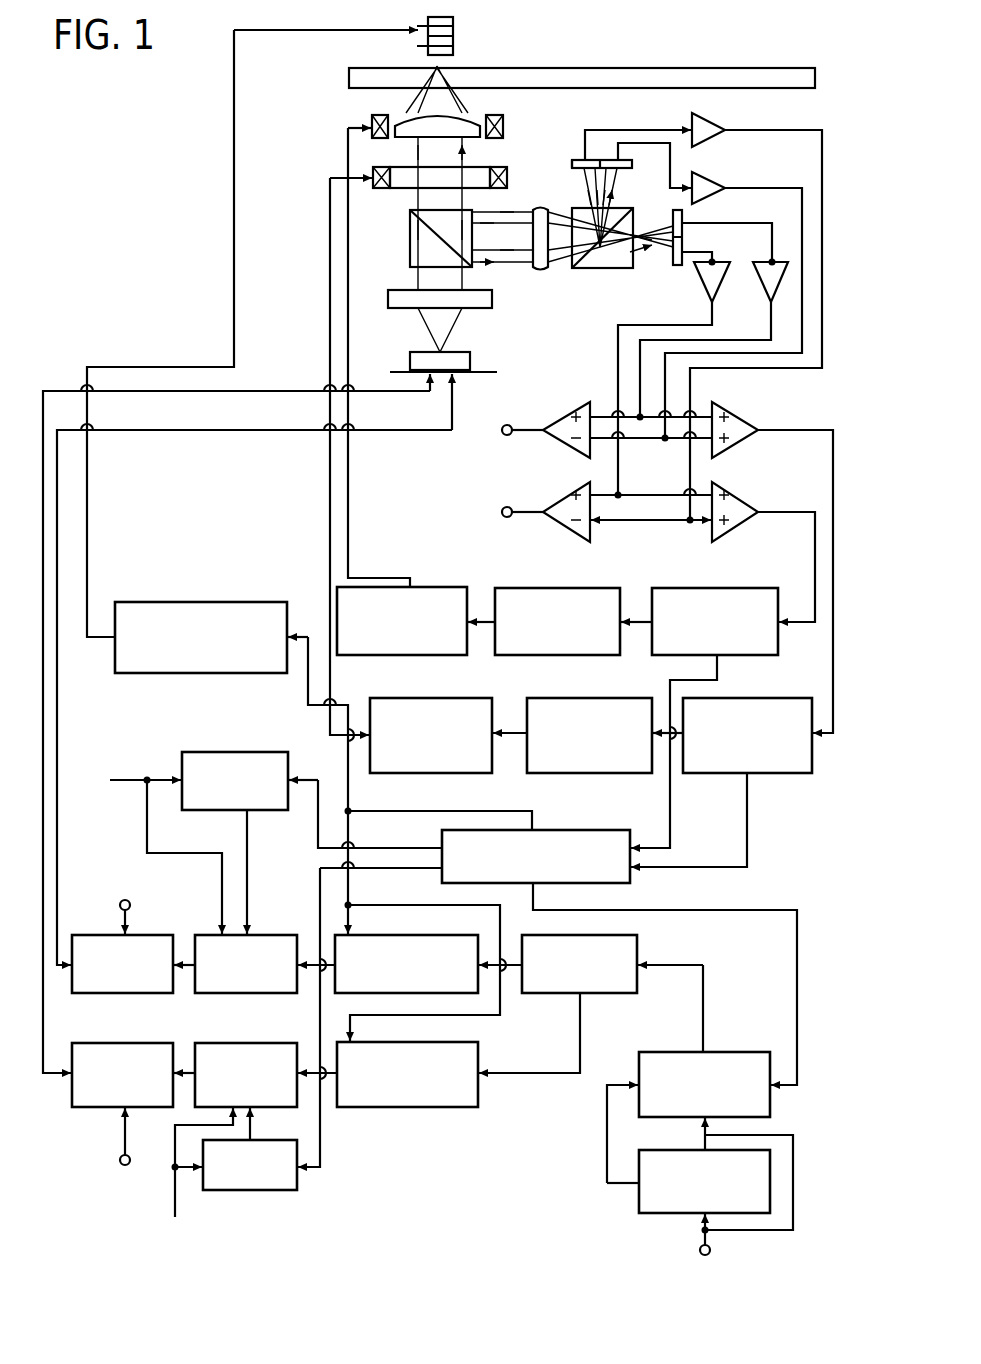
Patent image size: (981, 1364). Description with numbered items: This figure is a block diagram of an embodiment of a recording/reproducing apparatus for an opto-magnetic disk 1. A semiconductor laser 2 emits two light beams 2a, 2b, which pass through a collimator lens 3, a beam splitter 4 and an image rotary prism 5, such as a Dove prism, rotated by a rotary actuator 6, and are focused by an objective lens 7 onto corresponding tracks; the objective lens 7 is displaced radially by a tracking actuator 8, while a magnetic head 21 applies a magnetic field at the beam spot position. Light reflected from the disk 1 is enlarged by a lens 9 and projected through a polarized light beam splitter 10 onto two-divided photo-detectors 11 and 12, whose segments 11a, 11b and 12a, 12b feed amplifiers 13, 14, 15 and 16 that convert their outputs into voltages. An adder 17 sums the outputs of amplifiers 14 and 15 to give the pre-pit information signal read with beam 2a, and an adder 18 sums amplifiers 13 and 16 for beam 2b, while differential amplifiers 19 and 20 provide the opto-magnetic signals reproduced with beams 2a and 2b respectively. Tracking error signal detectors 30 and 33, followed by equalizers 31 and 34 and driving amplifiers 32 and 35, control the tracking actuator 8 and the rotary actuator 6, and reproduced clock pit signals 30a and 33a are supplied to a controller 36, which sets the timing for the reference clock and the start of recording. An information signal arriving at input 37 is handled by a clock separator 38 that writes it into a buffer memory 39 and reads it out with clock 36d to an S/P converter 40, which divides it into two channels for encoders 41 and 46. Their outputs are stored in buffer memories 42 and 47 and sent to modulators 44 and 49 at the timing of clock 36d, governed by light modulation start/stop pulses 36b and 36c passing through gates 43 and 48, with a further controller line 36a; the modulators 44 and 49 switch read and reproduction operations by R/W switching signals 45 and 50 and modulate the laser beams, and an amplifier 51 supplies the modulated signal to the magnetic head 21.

The opto-magnetic disk 1 is at (352, 68).
The semiconductor laser 2 is at (410, 360).
The laser beam 2a is at (236, 723).
The laser beam 2b is at (274, 669).
The collimator lens 3 is at (390, 299).
The beam splitter 4 is at (410, 240).
The image rotary prism 5 is at (396, 190).
The rotary actuator 6 is at (373, 178).
The objective lens 7 is at (395, 134).
The tracking actuator 8 is at (372, 120).
The lens 9 is at (538, 205).
The polarized light beam splitter 10 is at (600, 268).
The photo-detector 11 is at (602, 160).
The photo-detector segment 11a is at (634, 163).
The photo-detector segment 11b is at (575, 163).
The photo-detector 12 is at (674, 220).
The photo-detector segment 12a is at (684, 226).
The photo-detector segment 12b is at (684, 250).
The amplifier 13 is at (701, 118).
The amplifier 14 is at (701, 177).
The amplifier 15 is at (760, 282).
The amplifier 16 is at (701, 282).
The adder 17 is at (738, 415).
The adder 18 is at (740, 500).
The differential amplifier 19 is at (506, 436).
The differential amplifier 20 is at (505, 506).
The magnetic head 21 is at (453, 40).
The tracking error signal detector 30 is at (702, 588).
The reproduced clock pit signal 30a is at (650, 848).
The equalizer 31 is at (540, 588).
The driving amplifier 32 is at (420, 587).
The tracking error signal detector 33 is at (750, 698).
The reproduced clock pit signal 33a is at (648, 868).
The equalizer 34 is at (575, 698).
The driving amplifier 35 is at (436, 698).
The controller 36 is at (553, 830).
The controller output signal 36a is at (358, 811).
The light modulation start/stop pulse 36b is at (318, 822).
The light modulation start/stop pulse 36c is at (321, 1145).
The clock 36d is at (797, 952).
The information signal input 37 is at (700, 1250).
The clock separator 38 is at (639, 1192).
The buffer memory 39 is at (690, 1052).
The S/P (serial/parallel signal converter) 40 is at (638, 948).
The encoder 41 is at (337, 938).
The buffer memory 42 is at (205, 935).
The gate 43 is at (195, 752).
The modulator 44 is at (90, 935).
The R/W switching signal 45 is at (120, 896).
The encoder 46 is at (480, 1052).
The buffer memory 47 is at (255, 1043).
The gate 48 is at (262, 1190).
The modulator 49 is at (118, 1043).
The R/W switching signal 50 is at (120, 1162).
The amplifier 51 is at (146, 602).